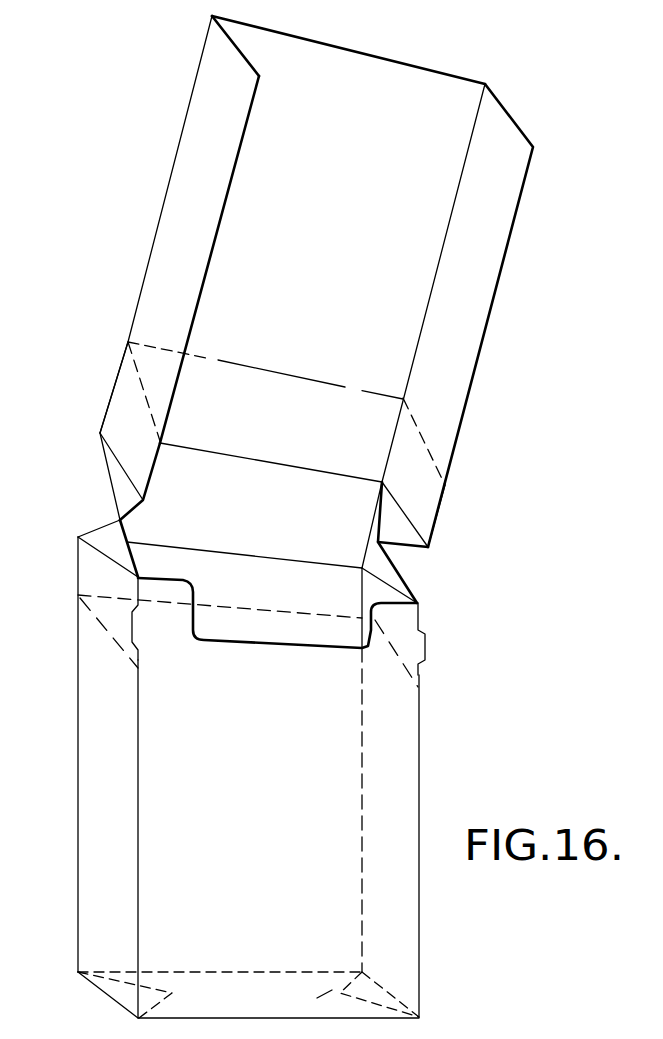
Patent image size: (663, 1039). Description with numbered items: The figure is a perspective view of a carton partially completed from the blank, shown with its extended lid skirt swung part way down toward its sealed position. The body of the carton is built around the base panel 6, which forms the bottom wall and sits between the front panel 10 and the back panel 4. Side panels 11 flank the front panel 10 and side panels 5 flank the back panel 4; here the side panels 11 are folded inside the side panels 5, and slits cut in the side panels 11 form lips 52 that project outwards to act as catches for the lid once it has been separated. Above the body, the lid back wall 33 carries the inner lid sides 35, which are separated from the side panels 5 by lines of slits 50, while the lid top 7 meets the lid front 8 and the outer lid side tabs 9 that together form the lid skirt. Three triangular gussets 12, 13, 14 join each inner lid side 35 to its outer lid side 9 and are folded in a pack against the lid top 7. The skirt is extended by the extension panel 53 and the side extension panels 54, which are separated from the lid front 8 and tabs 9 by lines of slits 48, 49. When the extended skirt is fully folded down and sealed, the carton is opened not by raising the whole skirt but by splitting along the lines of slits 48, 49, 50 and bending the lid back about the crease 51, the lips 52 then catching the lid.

The back panel 4 is at (310, 577).
The side panel 5 is at (98, 785).
The base panel 6 is at (362, 972).
The lid top panel 7 is at (270, 512).
The lid front panel 8 is at (310, 410).
The outer lid side tab 9 is at (125, 373).
The front panel 10 is at (268, 811).
The side panel 11 is at (383, 745).
The lid gusset 12 is at (125, 540).
The lid gusset 13 is at (97, 503).
The lid gusset 14 is at (120, 483).
The lid back wall 33 is at (205, 582).
The inner lid side 35 is at (98, 567).
The line of slits 48 is at (237, 362).
The line of slits 49 is at (143, 398).
The line of slits 50 is at (103, 632).
The crease 51 is at (308, 615).
The lip 52 is at (133, 634).
The extension panel 53 is at (347, 216).
The extension panel 54 is at (178, 203).